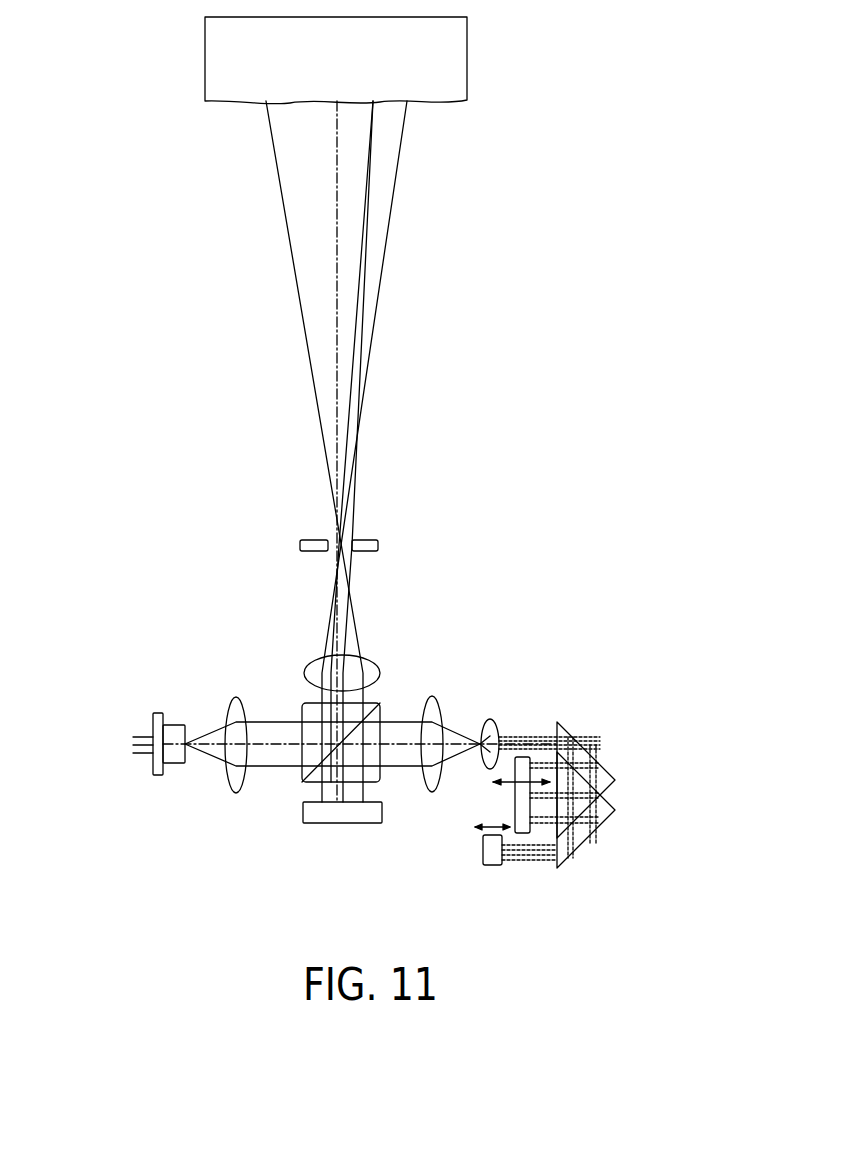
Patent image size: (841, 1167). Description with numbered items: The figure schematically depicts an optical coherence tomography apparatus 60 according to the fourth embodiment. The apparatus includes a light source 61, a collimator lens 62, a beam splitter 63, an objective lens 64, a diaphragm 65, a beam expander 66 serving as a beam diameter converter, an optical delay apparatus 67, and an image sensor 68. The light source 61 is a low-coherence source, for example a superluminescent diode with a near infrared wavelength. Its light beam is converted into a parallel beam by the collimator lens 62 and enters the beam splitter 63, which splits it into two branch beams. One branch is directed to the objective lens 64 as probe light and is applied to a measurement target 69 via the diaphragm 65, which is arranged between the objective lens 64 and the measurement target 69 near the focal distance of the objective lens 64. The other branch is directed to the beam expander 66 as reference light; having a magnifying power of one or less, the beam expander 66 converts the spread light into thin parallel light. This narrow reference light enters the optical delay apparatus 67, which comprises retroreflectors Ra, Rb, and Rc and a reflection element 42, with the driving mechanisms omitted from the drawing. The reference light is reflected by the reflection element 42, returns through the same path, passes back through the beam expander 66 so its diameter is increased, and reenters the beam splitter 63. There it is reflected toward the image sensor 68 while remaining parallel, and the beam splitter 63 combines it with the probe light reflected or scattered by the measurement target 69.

The optical coherence tomography apparatus 60 is at (158, 619).
The light source 61 is at (177, 765).
The collimator lens 62 is at (236, 793).
The beam splitter 63 is at (382, 702).
The objective lens 64 is at (362, 661).
The diaphragm 65 is at (378, 545).
The beam expander 66 is at (500, 690).
The optical delay apparatus 67 is at (595, 729).
The image sensor 68 is at (342, 823).
The measurement target 69 is at (467, 75).
The reflection element 42 is at (492, 867).
The retroreflector Ra is at (590, 745).
The retroreflector Rb is at (511, 803).
The retroreflector Rc is at (592, 838).